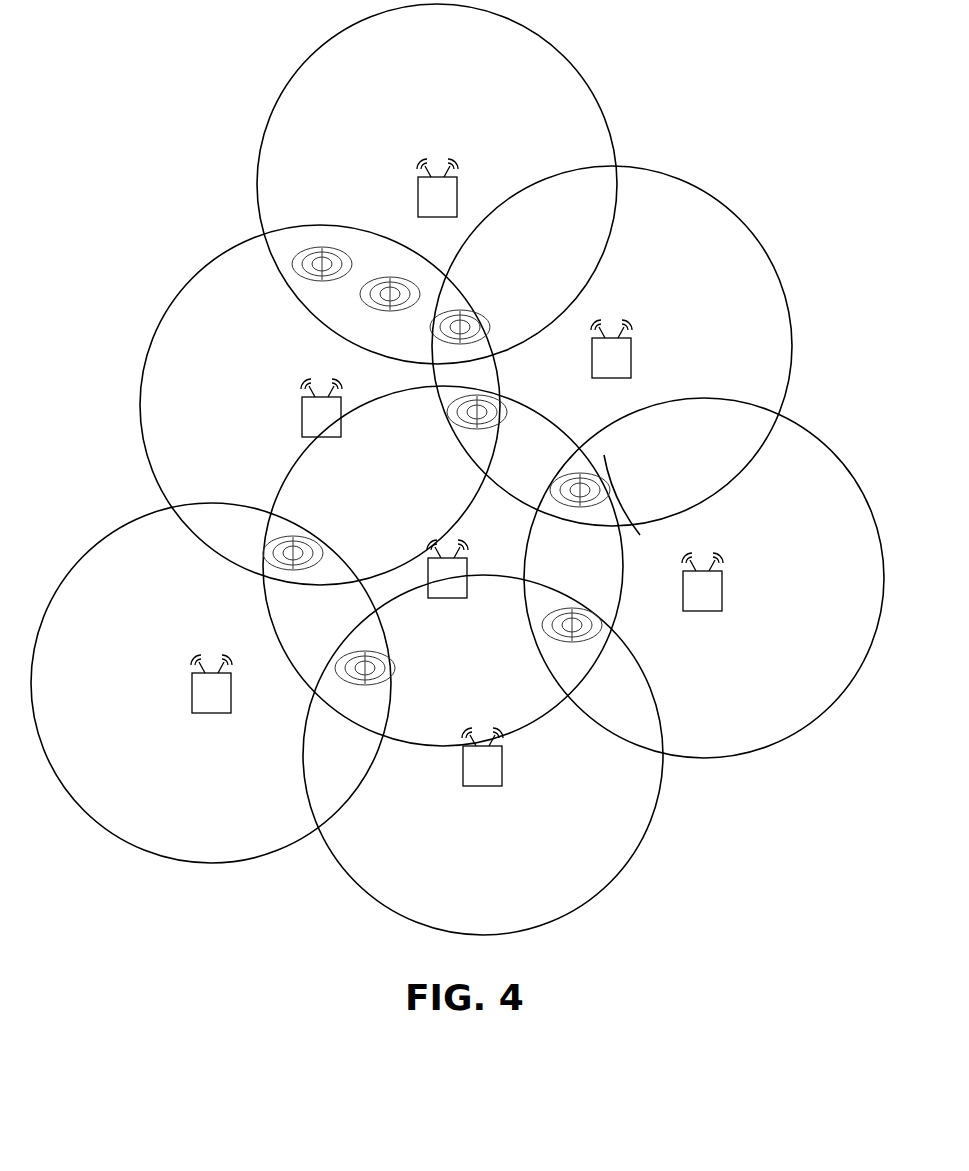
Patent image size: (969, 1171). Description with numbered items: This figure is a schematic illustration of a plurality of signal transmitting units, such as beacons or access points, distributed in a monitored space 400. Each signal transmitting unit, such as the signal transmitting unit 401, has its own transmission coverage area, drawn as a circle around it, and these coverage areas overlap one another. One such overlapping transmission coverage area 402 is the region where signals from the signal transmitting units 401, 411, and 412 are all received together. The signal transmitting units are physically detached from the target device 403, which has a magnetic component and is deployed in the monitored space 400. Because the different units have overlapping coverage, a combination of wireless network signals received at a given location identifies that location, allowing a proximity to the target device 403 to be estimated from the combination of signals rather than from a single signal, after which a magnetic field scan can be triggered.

The monitored space 400 is at (692, 100).
The signal transmitting unit 401 is at (692, 215).
The overlapping transmission coverage area 402 is at (622, 505).
The target device 403 is at (582, 467).
The signal transmitting unit 411 is at (706, 588).
The signal transmitting unit 412 is at (451, 573).